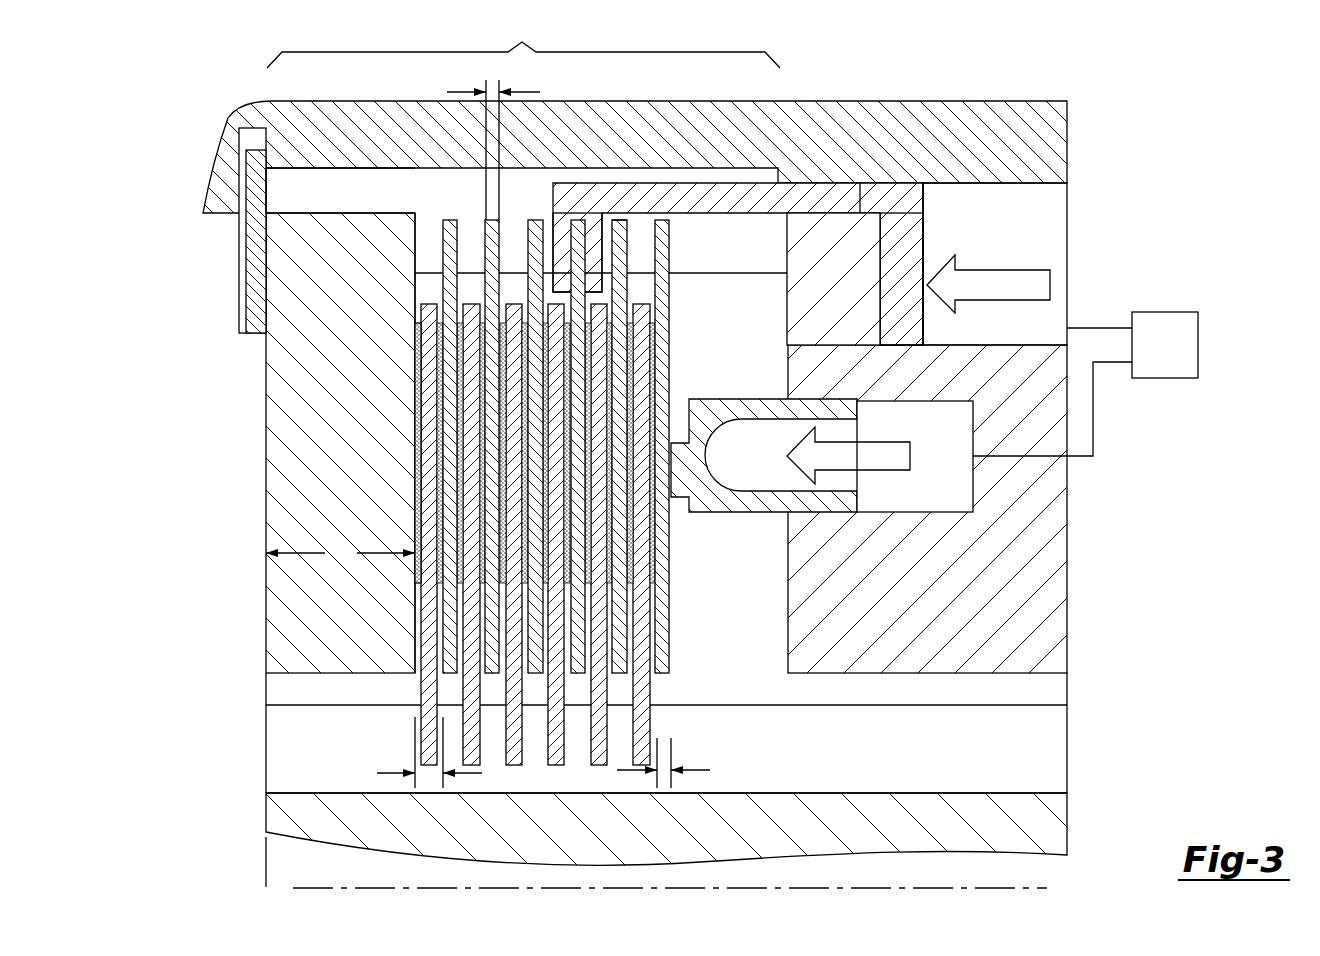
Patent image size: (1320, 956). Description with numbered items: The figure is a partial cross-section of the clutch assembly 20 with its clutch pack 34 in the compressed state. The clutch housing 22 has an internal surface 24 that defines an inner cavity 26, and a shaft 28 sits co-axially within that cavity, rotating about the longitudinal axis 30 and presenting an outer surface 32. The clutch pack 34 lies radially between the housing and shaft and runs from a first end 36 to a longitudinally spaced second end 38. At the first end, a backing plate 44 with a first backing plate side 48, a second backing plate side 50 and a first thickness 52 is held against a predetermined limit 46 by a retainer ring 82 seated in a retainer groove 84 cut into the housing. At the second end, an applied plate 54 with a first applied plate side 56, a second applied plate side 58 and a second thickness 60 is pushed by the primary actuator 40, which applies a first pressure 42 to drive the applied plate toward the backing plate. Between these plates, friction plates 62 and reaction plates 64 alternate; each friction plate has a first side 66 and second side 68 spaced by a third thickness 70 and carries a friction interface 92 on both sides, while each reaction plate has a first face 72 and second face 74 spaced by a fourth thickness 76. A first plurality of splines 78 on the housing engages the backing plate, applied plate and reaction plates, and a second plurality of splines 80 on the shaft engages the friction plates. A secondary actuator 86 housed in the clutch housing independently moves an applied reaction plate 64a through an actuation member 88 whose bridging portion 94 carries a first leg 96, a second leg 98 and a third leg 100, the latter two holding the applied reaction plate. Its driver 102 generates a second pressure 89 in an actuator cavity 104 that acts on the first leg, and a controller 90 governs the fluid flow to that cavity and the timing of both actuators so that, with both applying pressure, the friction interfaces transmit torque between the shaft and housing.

The clutch assembly 20 is at (1097, 75).
The clutch housing 22 is at (548, 115).
The internal surface 24 is at (333, 173).
The inner cavity 26 is at (413, 279).
The shaft 28 is at (1050, 831).
The longitudinal axis 30 is at (375, 890).
The outer surface 32 is at (297, 792).
The clutch pack 34 is at (523, 42).
The first end 36 is at (247, 62).
The second end 38 is at (797, 62).
The primary actuator 40 is at (947, 514).
The first pressure 42 is at (873, 440).
The backing plate 44 is at (290, 370).
The predetermined limit 46 is at (260, 865).
The first backing plate side 48 is at (266, 444).
The second backing plate side 50 is at (417, 218).
The first thickness 52 is at (340, 553).
The applied plate 54 is at (660, 653).
The first applied plate side 56 is at (655, 243).
The second applied plate side 58 is at (672, 248).
The second thickness 60 is at (694, 768).
The friction plates 62 is at (478, 468).
The reaction plates 64 is at (450, 237).
The applied reaction plate 64a is at (578, 235).
The first side 66 is at (413, 333).
The second side 68 is at (500, 290).
The third thickness 70 is at (387, 772).
The first face 72 is at (480, 246).
The second face 74 is at (503, 246).
The fourth thickness 76 is at (476, 92).
The first plurality of splines 78 is at (290, 202).
The second plurality of splines 80 is at (292, 727).
The retainer ring 82 is at (245, 293).
The retainer groove 84 is at (226, 128).
The secondary actuator 86 is at (905, 182).
The actuation member 88 is at (797, 182).
The second pressure 89 is at (985, 268).
The controller 90 is at (1153, 358).
The friction interface 92 is at (440, 517).
The bridging portion 94 is at (860, 190).
The first leg 96 is at (905, 235).
The second leg 98 is at (555, 203).
The third leg 100 is at (619, 243).
The driver 102 is at (1078, 215).
The actuator cavity 104 is at (1050, 253).